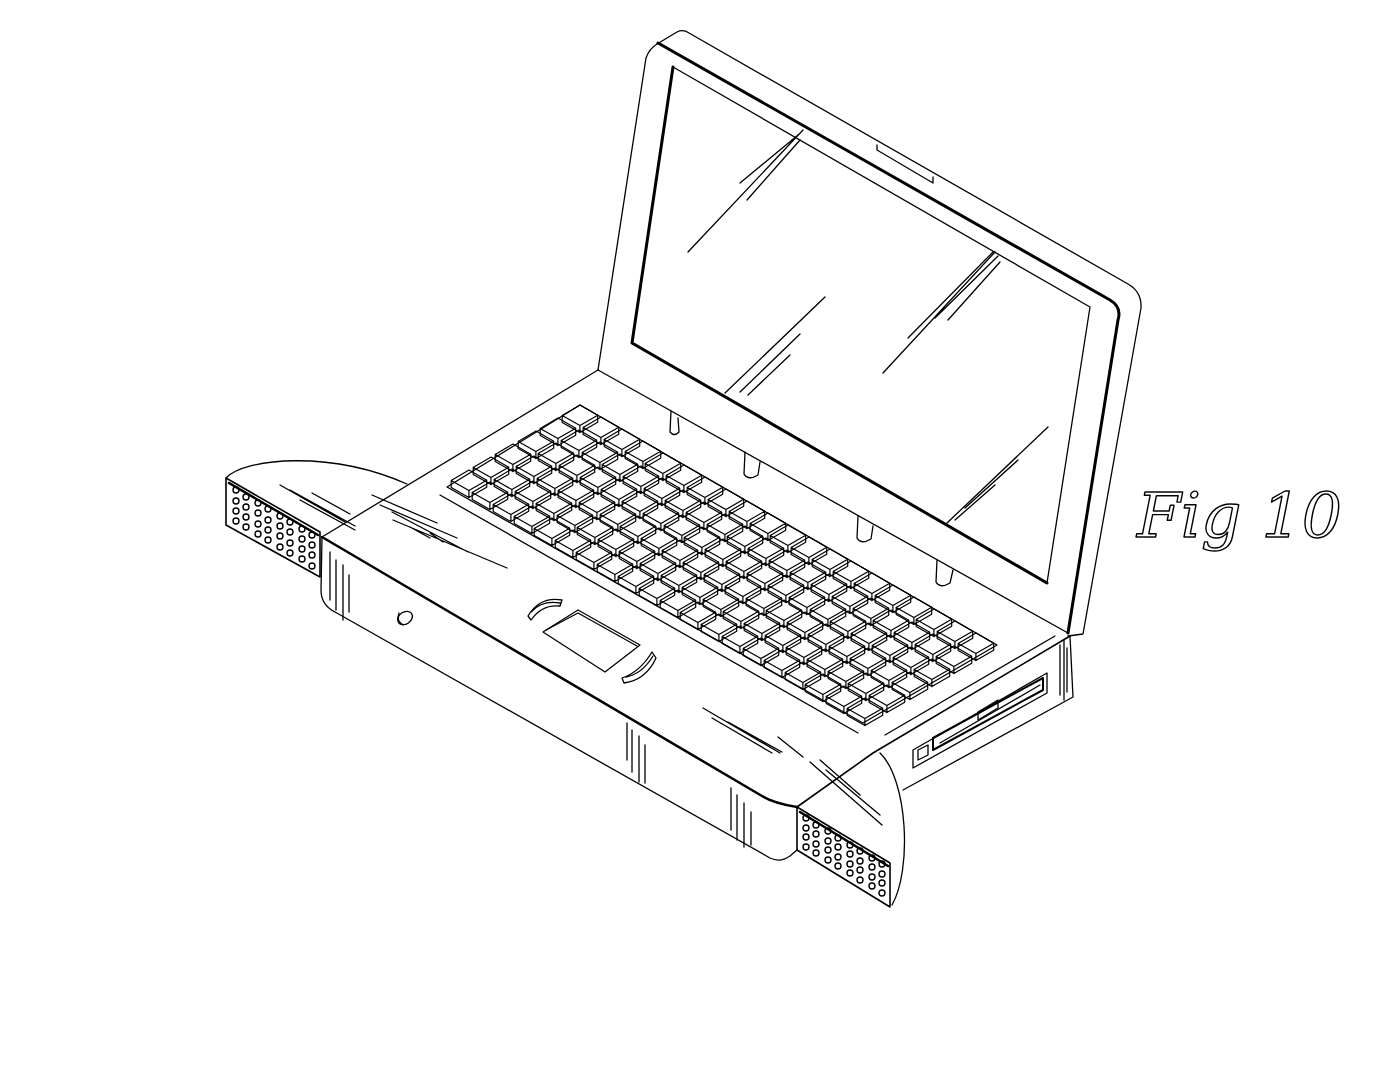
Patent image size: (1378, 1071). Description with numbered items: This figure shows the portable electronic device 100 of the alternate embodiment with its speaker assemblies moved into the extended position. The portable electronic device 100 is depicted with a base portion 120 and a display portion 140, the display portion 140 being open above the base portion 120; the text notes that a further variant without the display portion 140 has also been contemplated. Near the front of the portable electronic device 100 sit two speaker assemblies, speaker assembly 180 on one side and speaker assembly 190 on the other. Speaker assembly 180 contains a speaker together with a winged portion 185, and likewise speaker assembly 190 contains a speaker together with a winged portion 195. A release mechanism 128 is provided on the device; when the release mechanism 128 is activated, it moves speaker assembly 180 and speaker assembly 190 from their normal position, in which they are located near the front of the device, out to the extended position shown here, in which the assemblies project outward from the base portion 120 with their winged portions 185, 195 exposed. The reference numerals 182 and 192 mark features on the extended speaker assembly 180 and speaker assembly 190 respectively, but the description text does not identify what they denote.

The portable electronic device 100 is at (428, 278).
The display portion 140 is at (617, 245).
The base portion 120 is at (445, 478).
The release mechanism 128 is at (398, 625).
The speaker assembly 180 is at (234, 519).
The left speaker grille 182 is at (285, 540).
The winged portion 185 is at (310, 470).
The speaker assembly 190 is at (885, 830).
The right speaker grille 192 is at (842, 872).
The winged portion 195 is at (885, 808).